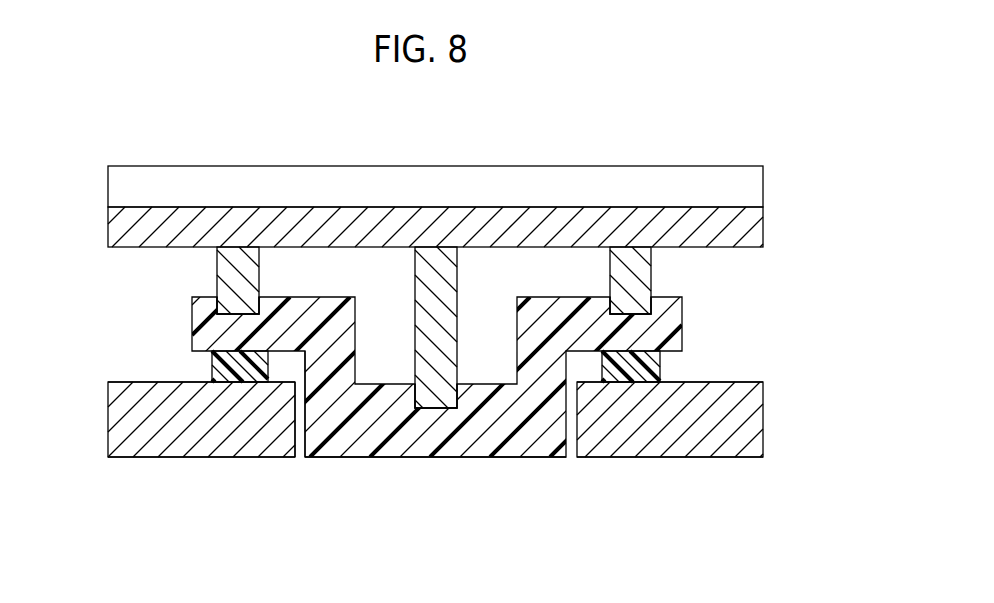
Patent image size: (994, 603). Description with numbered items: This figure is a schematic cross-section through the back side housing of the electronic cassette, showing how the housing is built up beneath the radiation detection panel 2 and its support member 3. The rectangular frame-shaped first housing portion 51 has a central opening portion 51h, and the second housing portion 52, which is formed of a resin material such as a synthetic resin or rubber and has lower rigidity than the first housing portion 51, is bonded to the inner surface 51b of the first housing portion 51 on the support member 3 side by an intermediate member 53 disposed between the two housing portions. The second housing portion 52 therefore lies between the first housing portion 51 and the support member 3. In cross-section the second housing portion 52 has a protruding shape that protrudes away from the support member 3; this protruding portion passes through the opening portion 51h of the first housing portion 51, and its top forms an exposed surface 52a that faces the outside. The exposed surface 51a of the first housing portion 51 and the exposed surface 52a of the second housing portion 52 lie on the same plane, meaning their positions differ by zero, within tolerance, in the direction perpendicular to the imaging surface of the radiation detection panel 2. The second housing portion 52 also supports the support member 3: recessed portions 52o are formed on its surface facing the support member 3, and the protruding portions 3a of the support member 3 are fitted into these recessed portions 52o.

The radiation detection panel 2 is at (757, 183).
The support member 3 is at (757, 232).
The protruding portion 3a is at (226, 257).
The first housing portion 51 is at (135, 448).
The exposed surface 51a is at (225, 458).
The inner surface 51b is at (115, 382).
The opening portion 51h is at (302, 458).
The second housing portion 52 is at (475, 450).
The exposed surface 52a is at (353, 458).
The recessed portion 52o is at (214, 305).
The intermediate member 53 is at (215, 358).